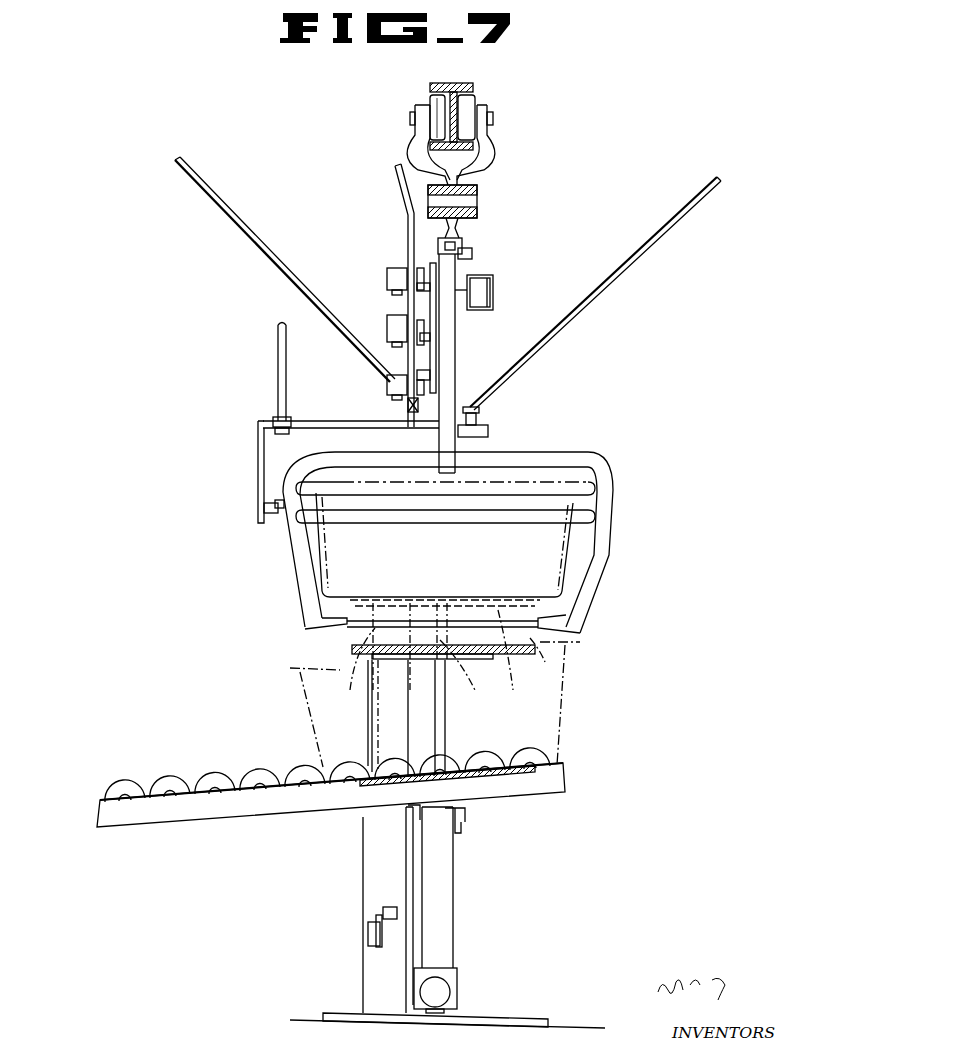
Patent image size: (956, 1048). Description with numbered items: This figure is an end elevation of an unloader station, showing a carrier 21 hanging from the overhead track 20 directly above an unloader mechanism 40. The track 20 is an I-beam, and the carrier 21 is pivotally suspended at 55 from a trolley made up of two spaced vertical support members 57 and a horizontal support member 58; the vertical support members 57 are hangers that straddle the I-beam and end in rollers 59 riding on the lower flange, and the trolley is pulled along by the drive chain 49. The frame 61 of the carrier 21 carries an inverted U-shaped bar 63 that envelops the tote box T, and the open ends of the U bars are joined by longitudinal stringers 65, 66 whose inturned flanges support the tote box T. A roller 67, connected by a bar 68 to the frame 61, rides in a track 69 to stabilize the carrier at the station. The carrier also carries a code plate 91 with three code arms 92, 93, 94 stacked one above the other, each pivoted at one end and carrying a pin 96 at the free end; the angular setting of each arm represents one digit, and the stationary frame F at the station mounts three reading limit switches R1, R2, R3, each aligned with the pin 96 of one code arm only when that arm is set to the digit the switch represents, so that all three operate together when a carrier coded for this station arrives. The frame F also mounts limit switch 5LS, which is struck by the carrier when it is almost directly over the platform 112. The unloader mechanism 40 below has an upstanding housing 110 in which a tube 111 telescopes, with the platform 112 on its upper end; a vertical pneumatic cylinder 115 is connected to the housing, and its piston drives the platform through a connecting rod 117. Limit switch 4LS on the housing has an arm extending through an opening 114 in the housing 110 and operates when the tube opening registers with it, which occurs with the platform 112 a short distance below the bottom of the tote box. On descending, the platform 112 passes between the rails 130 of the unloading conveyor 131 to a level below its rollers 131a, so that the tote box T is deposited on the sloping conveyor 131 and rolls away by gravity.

The track 20 is at (468, 86).
The rollers 59 is at (441, 104).
The vertical support members 57 is at (491, 141).
The drive chain 49 is at (477, 203).
The horizontal support member 58 is at (466, 241).
The pivotal suspension point 55 is at (472, 256).
The bar 68 is at (450, 318).
The pin 96 is at (428, 263).
The limit switch R1 is at (388, 278).
The limit switch R2 is at (390, 320).
The limit switch R3 is at (388, 383).
The code arm 92 is at (428, 288).
The code arm 93 is at (420, 343).
The code arm 94 is at (436, 378).
The roller 67 is at (493, 284).
The track 69 is at (493, 297).
The code plate 91 is at (440, 392).
The frame 61 is at (468, 414).
The carrier 21 is at (608, 447).
The frame F is at (258, 468).
The limit switch 5LS is at (268, 515).
The bar 63 is at (612, 550).
The longitudinal stringer 65 is at (310, 616).
The longitudinal stringer 66 is at (576, 617).
The tote box T is at (320, 568).
The platform 112 is at (500, 676).
The tube 111 is at (382, 690).
The connecting rod 117 is at (446, 712).
The unloading conveyor 131 is at (150, 821).
The rail 130 is at (277, 805).
The rollers 131a is at (253, 775).
The housing 110 is at (363, 877).
The limit switch 4LS is at (378, 911).
The opening 114 is at (366, 937).
The pneumatic cylinder 115 is at (454, 937).
The unloader mechanism 40 is at (530, 873).